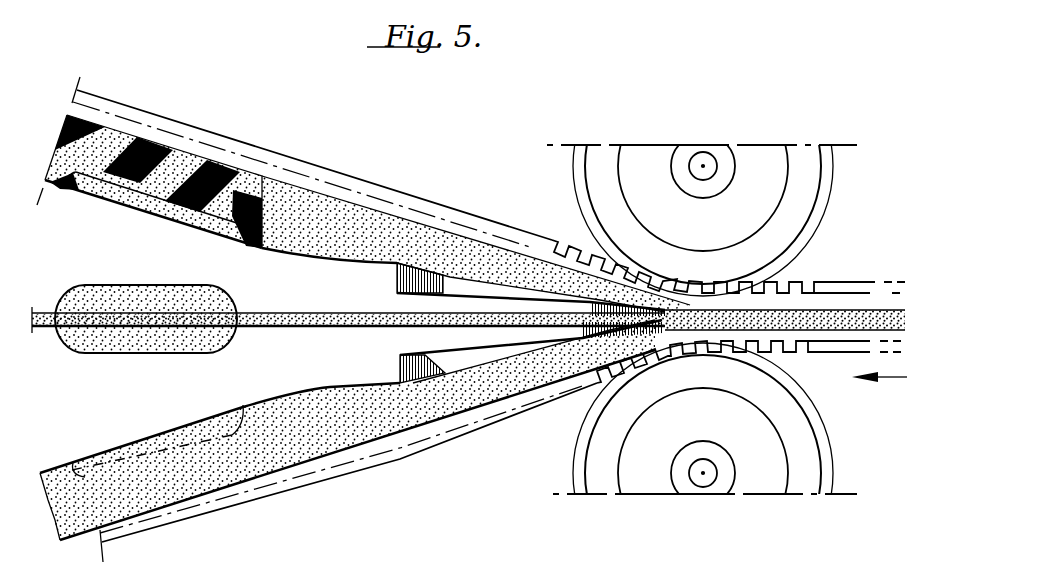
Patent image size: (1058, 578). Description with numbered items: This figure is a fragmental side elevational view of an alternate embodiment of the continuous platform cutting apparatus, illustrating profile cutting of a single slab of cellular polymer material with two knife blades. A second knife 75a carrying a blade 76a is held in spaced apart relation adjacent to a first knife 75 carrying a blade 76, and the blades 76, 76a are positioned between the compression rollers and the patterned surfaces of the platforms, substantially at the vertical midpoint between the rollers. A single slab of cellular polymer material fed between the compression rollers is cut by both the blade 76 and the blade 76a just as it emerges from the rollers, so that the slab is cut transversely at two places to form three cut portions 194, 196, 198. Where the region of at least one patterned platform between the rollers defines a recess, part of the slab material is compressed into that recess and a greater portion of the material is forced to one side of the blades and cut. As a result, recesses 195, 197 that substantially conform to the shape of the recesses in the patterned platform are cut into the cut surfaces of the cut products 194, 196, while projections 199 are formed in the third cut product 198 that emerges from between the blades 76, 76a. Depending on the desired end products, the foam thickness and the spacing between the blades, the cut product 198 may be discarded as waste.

The cut portion 194 is at (323, 215).
The recess 195 is at (102, 172).
The projection 199 is at (88, 333).
The cut product 198 is at (320, 328).
The second knife 75a is at (397, 290).
The first knife 75 is at (400, 358).
The blade 76a is at (607, 303).
The knife blade 76 is at (593, 375).
The cut portion 196 is at (290, 433).
The recess 197 is at (117, 450).